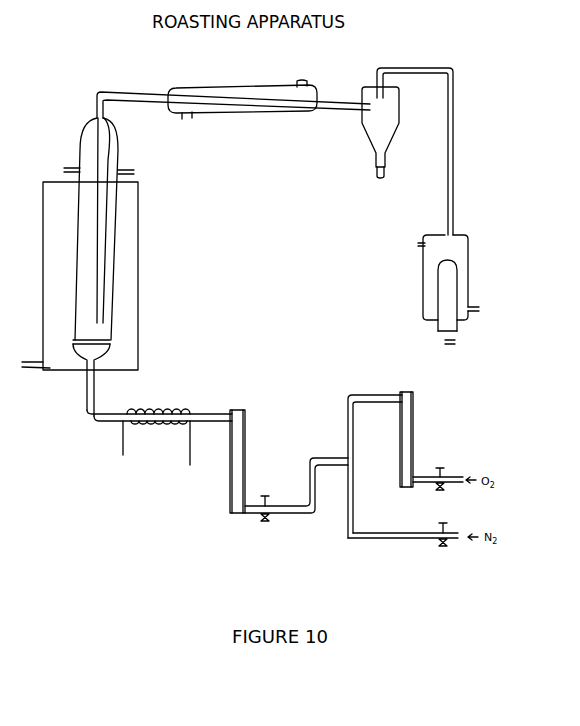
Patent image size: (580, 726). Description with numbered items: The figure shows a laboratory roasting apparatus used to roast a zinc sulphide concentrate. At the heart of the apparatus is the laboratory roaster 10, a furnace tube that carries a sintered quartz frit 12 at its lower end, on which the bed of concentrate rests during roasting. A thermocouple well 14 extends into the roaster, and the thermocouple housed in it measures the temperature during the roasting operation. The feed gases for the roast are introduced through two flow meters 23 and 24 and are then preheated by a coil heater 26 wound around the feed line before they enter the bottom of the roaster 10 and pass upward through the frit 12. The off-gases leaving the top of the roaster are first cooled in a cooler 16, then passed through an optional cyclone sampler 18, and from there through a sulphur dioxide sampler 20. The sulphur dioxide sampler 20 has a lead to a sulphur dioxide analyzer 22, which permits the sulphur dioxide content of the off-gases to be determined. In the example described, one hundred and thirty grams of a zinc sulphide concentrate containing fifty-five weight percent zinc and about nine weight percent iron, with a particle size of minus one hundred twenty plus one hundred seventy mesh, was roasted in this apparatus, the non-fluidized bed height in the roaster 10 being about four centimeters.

The laboratory roaster 10 is at (94, 276).
The sintered quartz frit 12 is at (119, 345).
The thermocouple well 14 is at (111, 229).
The off-gas cooler 16 is at (242, 94).
The cyclone sampler 18 is at (407, 151).
The sulphur dioxide sampler 20 is at (457, 277).
The sulphur dioxide analyzer 22 is at (454, 313).
The flow meter 23 is at (418, 439).
The flow meter 24 is at (228, 461).
The coil heater 26 is at (156, 445).